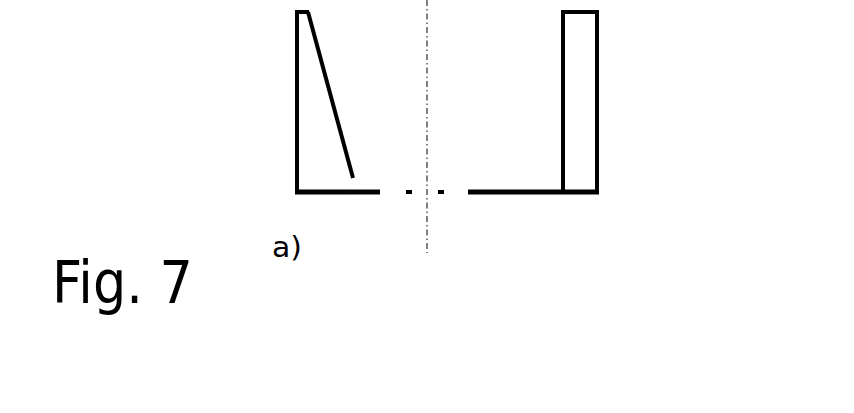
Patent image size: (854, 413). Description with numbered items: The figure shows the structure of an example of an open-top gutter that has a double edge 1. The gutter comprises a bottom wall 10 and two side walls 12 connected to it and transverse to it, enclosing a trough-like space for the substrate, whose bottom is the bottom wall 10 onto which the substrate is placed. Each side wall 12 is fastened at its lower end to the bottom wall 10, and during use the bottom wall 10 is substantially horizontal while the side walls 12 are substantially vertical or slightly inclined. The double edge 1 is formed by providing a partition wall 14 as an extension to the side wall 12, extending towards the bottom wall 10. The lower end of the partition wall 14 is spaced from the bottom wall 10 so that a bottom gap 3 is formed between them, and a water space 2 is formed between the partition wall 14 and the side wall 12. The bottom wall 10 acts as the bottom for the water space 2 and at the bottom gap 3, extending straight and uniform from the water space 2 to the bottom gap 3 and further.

The double edge 1 is at (453, 130).
The water space 2 is at (445, 130).
The bottom gap 3 is at (362, 183).
The bottom wall 10 is at (469, 254).
The side wall 12 is at (296, 107).
The partition wall 14 is at (562, 117).